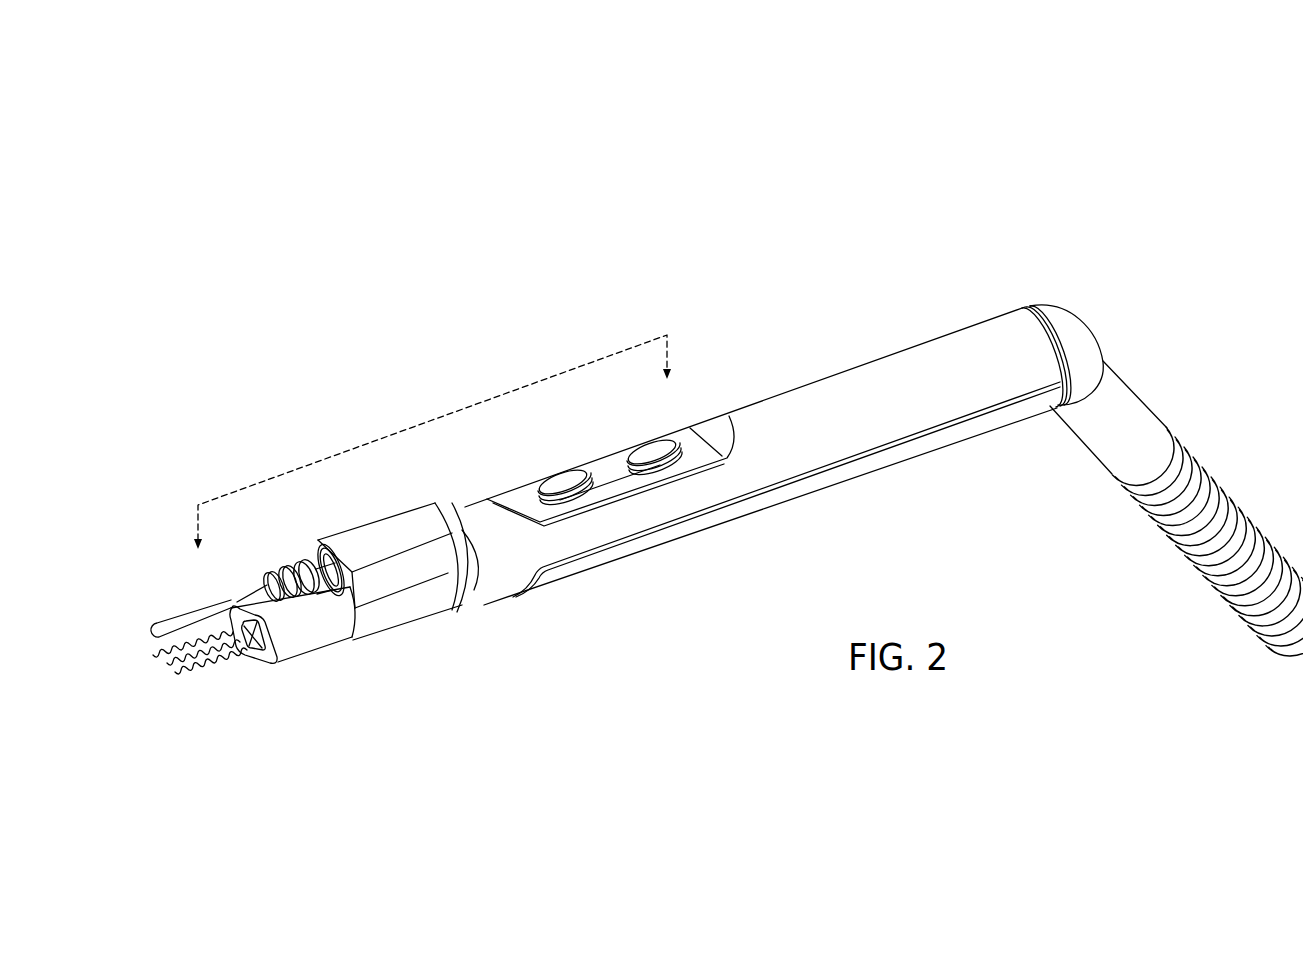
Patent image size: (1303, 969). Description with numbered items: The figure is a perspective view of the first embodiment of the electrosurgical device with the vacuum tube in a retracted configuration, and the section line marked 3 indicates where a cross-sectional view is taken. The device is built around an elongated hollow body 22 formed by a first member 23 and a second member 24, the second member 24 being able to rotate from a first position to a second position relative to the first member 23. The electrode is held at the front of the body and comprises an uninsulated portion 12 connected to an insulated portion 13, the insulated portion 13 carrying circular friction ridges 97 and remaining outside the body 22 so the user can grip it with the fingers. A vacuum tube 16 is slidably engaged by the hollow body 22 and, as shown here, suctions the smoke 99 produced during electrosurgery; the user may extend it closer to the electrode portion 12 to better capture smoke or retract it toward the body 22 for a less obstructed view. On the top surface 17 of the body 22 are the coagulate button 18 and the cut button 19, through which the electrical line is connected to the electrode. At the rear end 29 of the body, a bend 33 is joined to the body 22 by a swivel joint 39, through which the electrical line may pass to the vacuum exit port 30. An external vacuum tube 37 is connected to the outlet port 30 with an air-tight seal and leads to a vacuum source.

The rear end 29 is at (1139, 163).
The hollow body 22 is at (1043, 130).
The second member 24 is at (409, 585).
The vacuum tube 16 is at (308, 635).
The uninsulated portion 12 is at (167, 627).
The circular friction ridges 97 is at (271, 574).
The insulated portion 13 is at (286, 568).
The smoke 99 is at (212, 655).
The first member 23 is at (653, 521).
The top surface 17 is at (609, 472).
The coagulate button 18 is at (560, 475).
The cut button 19 is at (643, 445).
The swivel joint 39 is at (1031, 305).
The bend 33 is at (1081, 333).
The vacuum exit port 30 is at (1139, 414).
The external vacuum tube 37 is at (1192, 573).
The section line 3- 3 is at (431, 423).